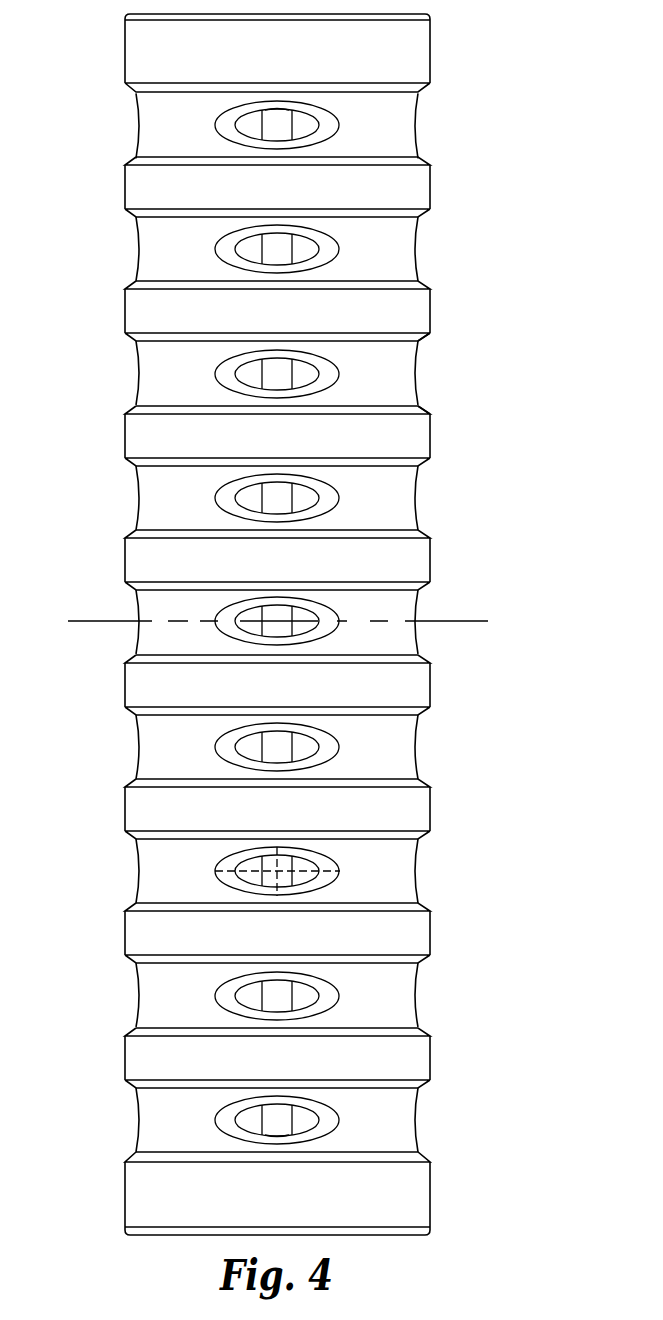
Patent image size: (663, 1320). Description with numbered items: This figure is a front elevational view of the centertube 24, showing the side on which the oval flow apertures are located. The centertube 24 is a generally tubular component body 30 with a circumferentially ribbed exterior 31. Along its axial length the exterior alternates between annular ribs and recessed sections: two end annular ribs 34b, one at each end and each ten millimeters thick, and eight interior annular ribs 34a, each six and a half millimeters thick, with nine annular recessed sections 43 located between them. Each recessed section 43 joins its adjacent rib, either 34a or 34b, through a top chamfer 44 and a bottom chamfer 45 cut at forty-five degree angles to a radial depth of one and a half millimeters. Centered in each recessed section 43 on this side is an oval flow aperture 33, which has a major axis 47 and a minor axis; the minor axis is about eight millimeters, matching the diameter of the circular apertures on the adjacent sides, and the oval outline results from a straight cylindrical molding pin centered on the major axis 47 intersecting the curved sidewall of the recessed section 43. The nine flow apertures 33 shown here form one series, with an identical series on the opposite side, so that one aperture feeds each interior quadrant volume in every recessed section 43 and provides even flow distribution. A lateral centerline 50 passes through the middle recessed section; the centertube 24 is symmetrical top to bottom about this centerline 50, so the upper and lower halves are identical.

The centertube 24 is at (488, 290).
The component body 30 is at (157, 97).
The circumferentially ribbed exterior 31 is at (430, 437).
The flow aperture 33 is at (317, 236).
The interior annular rib 34a is at (408, 182).
The end annular rib 34b is at (403, 55).
The recessed section 43 is at (157, 250).
The top chamfer 44 is at (418, 338).
The bottom chamfer 45 is at (417, 405).
The major axis 47 is at (332, 870).
The lateral centerline 50 is at (438, 621).